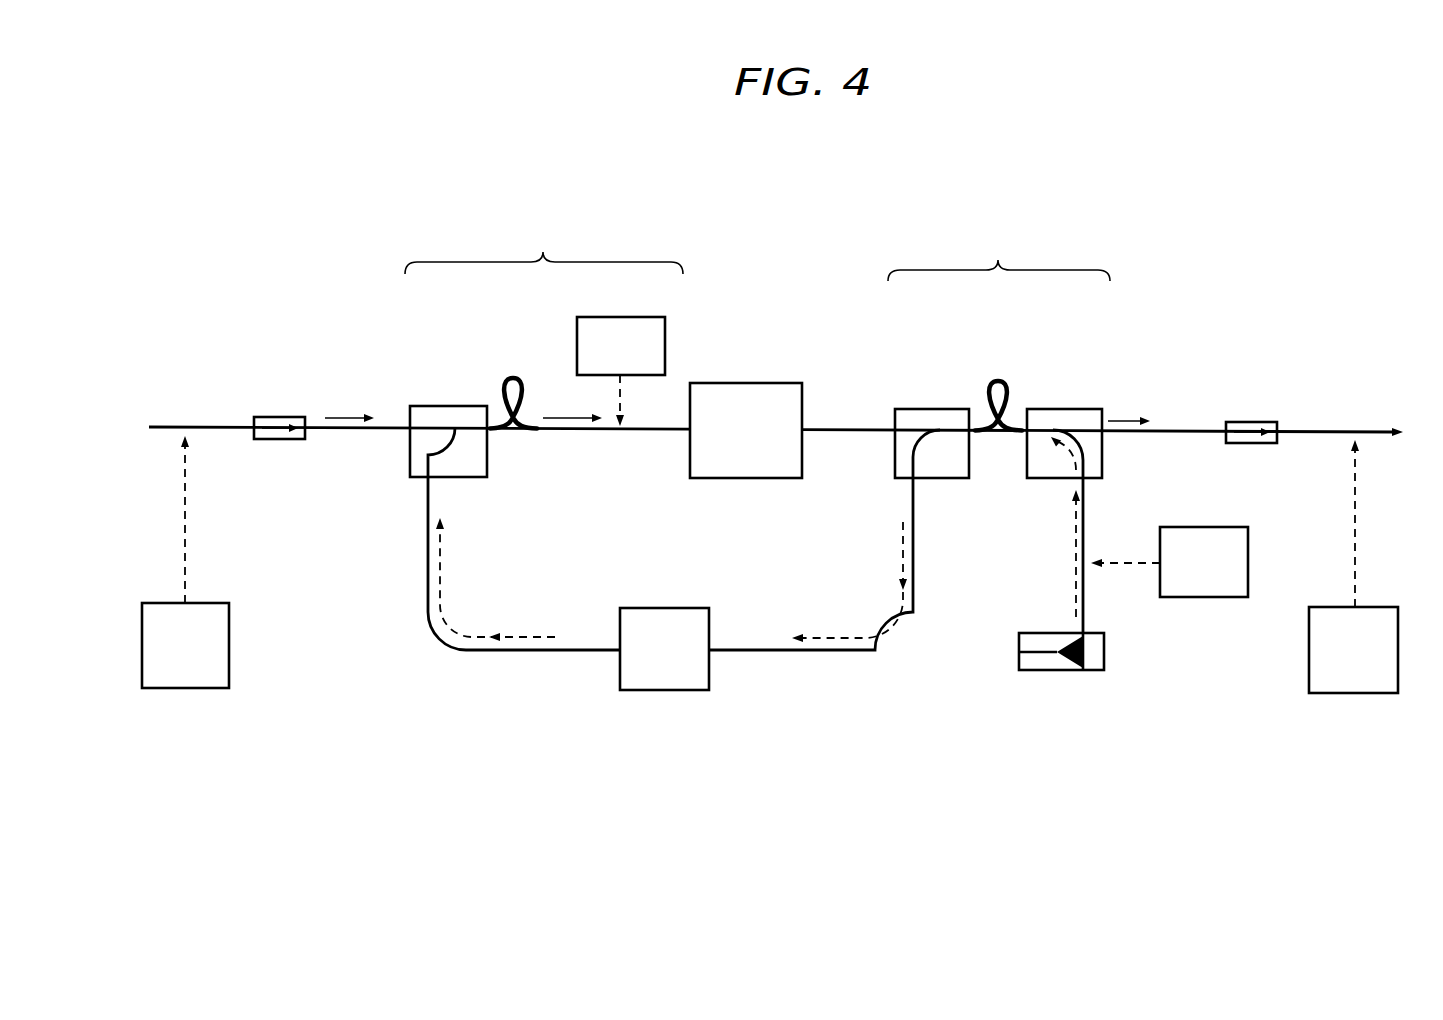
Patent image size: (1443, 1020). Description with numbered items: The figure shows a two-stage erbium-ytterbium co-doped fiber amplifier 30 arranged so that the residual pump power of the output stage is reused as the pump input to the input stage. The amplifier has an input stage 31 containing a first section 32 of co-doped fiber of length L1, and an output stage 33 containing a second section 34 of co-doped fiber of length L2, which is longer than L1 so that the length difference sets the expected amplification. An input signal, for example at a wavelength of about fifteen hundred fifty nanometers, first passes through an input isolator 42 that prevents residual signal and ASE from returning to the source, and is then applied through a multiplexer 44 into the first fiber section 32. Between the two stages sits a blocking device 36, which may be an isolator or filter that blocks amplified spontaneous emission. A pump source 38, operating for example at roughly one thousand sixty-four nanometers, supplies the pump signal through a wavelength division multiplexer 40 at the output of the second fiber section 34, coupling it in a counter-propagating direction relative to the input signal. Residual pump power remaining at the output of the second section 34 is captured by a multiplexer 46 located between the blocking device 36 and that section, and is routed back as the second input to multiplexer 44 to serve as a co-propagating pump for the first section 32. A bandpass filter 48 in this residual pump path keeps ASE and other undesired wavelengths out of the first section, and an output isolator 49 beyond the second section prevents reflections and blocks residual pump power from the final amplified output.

The two-stage Er-Yb doped fiber amplifier 30 is at (791, 148).
The input stage 31 is at (544, 277).
The first section of co-doped Er-Yb fiber 32 is at (511, 381).
The output stage 33 is at (999, 283).
The second section of co-doped Er-Yb fiber 34 is at (1003, 385).
The blocking device 36 is at (746, 383).
The pump source 38 is at (1104, 652).
The wavelength division multiplexer 40 is at (1102, 467).
The input isolator 42 is at (280, 417).
The multiplexer 44 is at (410, 456).
The multiplexer 46 is at (895, 456).
The bandpass filter 48 is at (660, 608).
The output isolator 49 is at (1252, 422).